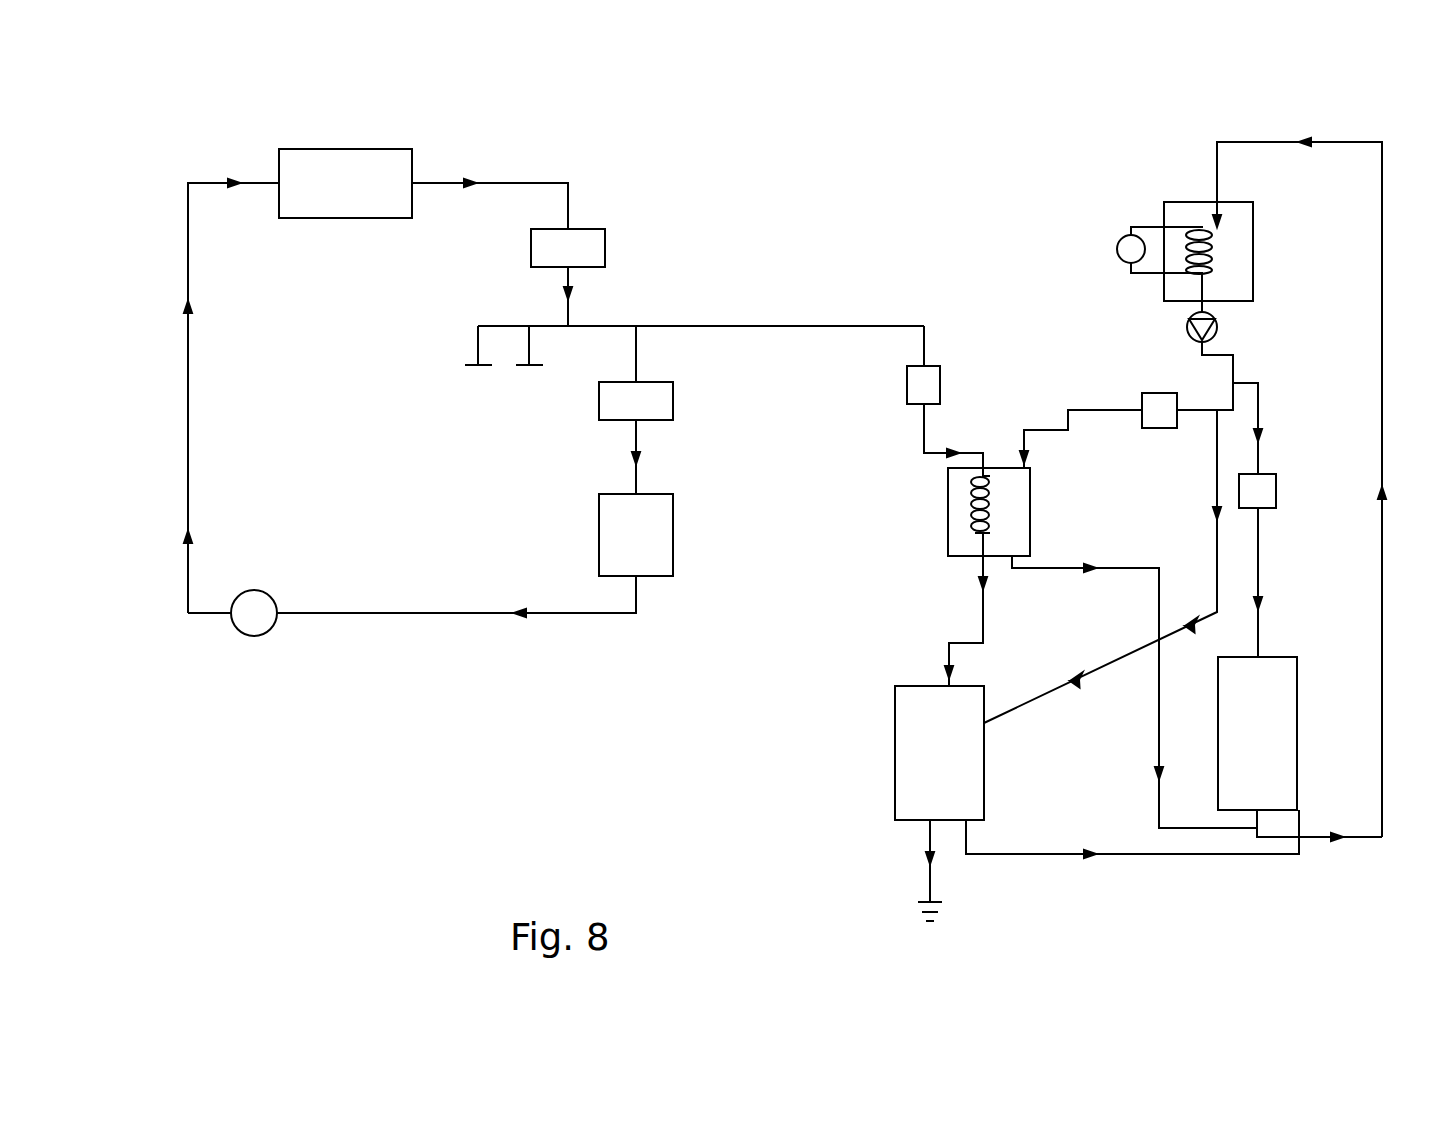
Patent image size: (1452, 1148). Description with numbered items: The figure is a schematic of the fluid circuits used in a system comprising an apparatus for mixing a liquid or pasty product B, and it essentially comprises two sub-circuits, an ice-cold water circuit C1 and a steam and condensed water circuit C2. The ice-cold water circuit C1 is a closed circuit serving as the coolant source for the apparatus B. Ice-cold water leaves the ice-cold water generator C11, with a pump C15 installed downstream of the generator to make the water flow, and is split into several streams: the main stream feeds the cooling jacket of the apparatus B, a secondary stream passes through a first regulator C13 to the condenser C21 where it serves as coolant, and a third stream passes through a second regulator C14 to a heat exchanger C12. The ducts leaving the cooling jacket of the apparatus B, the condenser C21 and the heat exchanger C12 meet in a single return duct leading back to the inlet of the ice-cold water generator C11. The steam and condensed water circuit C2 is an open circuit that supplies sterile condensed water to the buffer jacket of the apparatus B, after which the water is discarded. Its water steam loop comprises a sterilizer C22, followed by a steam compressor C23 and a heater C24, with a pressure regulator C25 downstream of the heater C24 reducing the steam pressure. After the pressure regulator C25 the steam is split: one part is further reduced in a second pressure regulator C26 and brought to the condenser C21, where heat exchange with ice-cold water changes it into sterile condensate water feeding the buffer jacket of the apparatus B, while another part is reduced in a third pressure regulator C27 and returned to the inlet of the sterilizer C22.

The ice-cold water circuit C1 is at (1266, 67).
The steam and condensed water circuit C2 is at (419, 67).
The ice-cold water generator C11 is at (1227, 252).
The heat exchanger C12 is at (1280, 685).
The first regulator C13 is at (1160, 417).
The second regulator C14 is at (1262, 490).
The pump C15 is at (1188, 327).
The condenser C21 is at (948, 508).
The sterilizer C22 is at (622, 534).
The steam compressor C23 is at (250, 622).
The heater C24 is at (349, 162).
The pressure regulator C25 is at (595, 240).
The second pressure regulator C26 is at (905, 388).
The third pressure regulator C27 is at (612, 397).
The apparatus for mixing a liquid or pasty product B is at (939, 769).